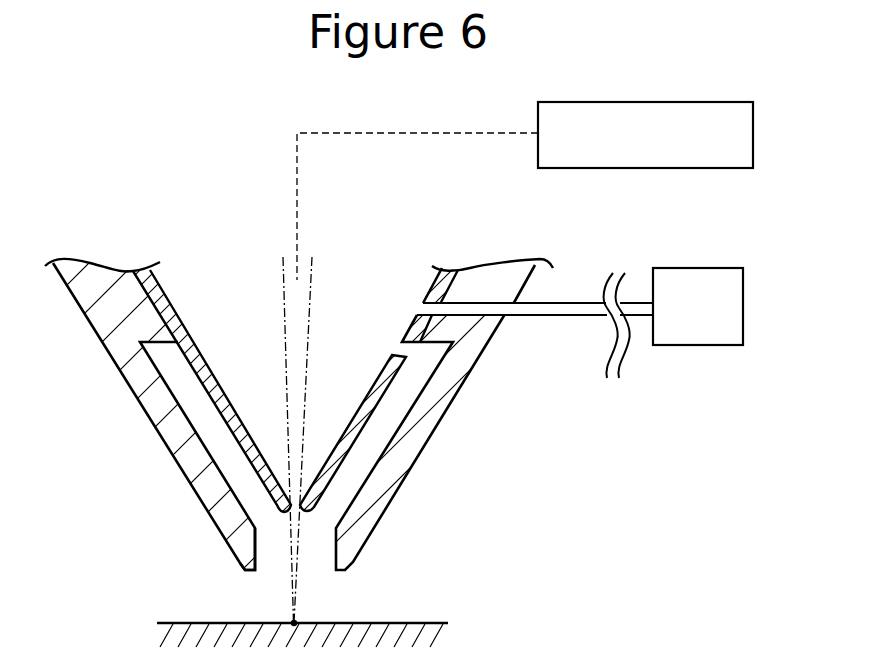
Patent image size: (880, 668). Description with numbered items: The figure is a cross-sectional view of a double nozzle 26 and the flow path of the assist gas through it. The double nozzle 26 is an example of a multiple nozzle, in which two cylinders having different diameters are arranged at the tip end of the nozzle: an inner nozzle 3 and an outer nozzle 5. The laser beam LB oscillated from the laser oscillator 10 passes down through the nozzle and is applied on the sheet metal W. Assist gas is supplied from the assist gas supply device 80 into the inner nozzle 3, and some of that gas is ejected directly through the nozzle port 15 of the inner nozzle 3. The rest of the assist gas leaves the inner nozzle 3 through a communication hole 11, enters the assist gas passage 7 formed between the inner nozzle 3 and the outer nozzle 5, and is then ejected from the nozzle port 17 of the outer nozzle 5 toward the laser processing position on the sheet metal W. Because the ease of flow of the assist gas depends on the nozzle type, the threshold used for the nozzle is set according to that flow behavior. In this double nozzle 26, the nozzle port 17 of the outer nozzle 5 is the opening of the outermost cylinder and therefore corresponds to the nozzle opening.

The inner nozzle 3 is at (367, 408).
The outer nozzle 5 is at (382, 410).
The assist gas passage 7 is at (206, 432).
The laser oscillator 10 is at (645, 148).
The communication hole 11 is at (413, 350).
The nozzle port 15 is at (267, 507).
The nozzle port 17 is at (276, 552).
The double nozzle 26 is at (414, 410).
The assist gas supply device 80 is at (700, 332).
The laser beam LB is at (308, 291).
The sheet metal W is at (390, 623).